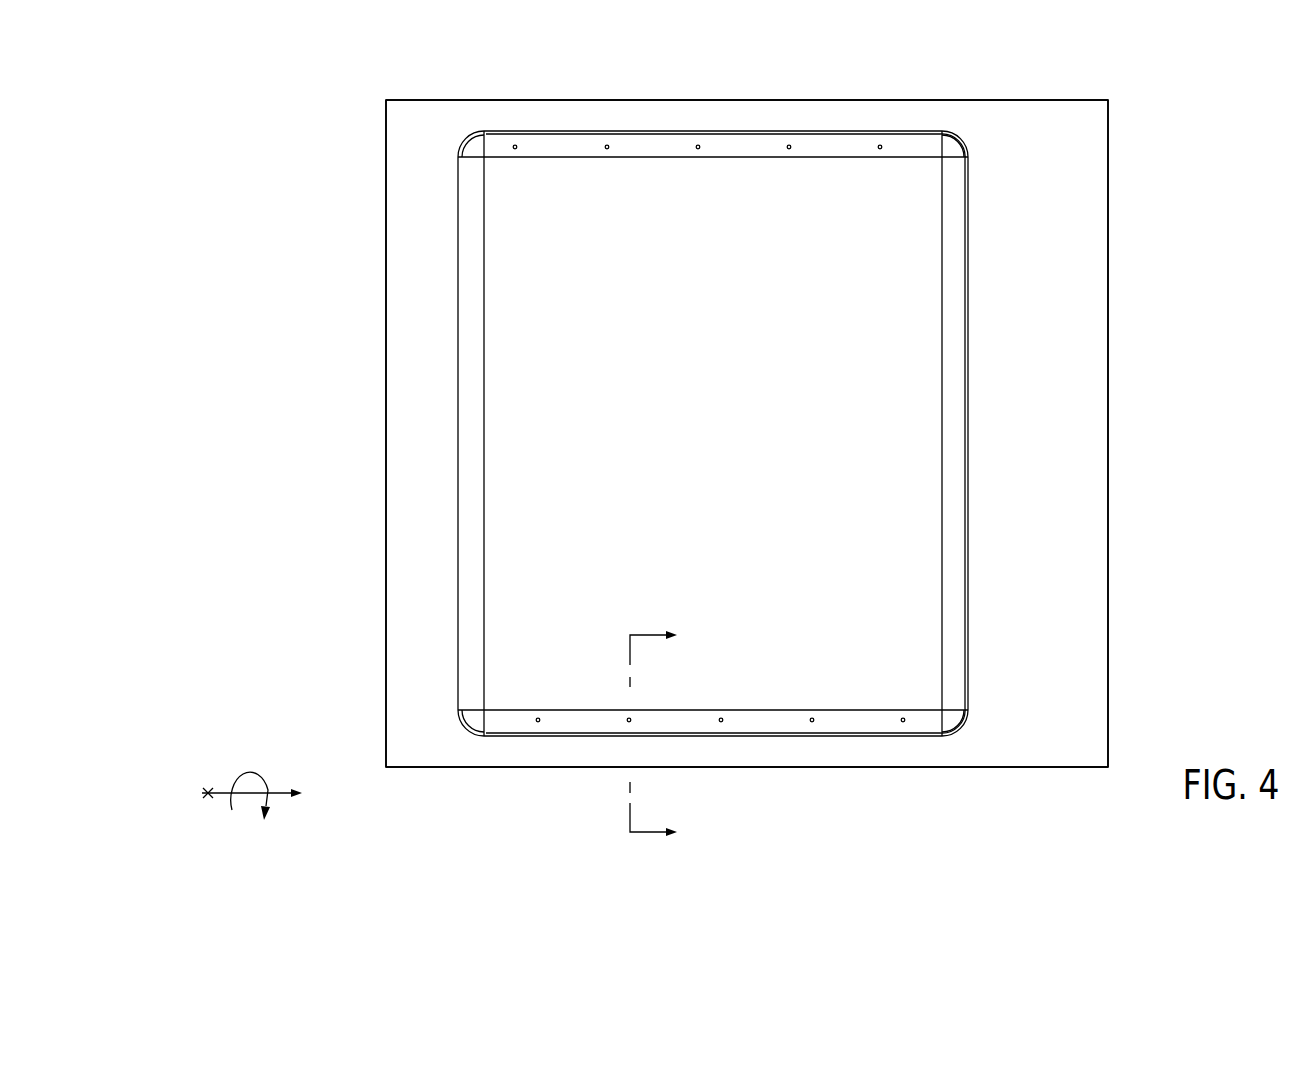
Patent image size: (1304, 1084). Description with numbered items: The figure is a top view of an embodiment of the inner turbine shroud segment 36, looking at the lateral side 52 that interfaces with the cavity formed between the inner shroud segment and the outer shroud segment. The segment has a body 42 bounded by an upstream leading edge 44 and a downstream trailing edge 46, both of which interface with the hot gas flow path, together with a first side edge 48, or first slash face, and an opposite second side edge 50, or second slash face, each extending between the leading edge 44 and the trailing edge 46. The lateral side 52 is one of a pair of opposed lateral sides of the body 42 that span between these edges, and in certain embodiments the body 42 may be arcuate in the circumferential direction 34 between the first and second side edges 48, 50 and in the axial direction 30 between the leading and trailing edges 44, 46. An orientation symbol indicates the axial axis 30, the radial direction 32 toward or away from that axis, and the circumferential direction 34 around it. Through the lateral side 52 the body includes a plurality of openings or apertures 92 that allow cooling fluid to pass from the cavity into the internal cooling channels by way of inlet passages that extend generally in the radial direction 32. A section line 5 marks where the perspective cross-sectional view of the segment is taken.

The line 5- 5 is at (662, 735).
The axial axis 30 is at (277, 795).
The radial direction 32 is at (207, 788).
The circumferential direction 34 is at (240, 764).
The inner turbine shroud segment 36 is at (1027, 768).
The body 42 is at (1050, 768).
The leading edge 44 is at (386, 385).
The trailing edge 46 is at (1108, 408).
The first side edge 48 is at (596, 768).
The second side edge 50 is at (713, 100).
The lateral side 52 is at (849, 195).
The apertures 92 is at (515, 149).